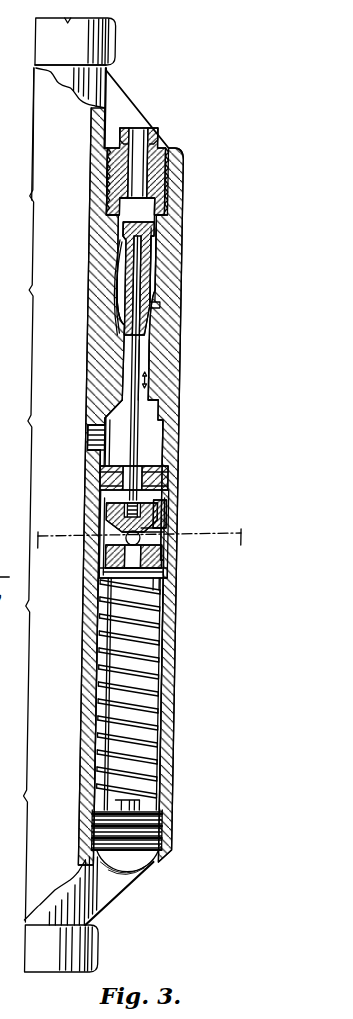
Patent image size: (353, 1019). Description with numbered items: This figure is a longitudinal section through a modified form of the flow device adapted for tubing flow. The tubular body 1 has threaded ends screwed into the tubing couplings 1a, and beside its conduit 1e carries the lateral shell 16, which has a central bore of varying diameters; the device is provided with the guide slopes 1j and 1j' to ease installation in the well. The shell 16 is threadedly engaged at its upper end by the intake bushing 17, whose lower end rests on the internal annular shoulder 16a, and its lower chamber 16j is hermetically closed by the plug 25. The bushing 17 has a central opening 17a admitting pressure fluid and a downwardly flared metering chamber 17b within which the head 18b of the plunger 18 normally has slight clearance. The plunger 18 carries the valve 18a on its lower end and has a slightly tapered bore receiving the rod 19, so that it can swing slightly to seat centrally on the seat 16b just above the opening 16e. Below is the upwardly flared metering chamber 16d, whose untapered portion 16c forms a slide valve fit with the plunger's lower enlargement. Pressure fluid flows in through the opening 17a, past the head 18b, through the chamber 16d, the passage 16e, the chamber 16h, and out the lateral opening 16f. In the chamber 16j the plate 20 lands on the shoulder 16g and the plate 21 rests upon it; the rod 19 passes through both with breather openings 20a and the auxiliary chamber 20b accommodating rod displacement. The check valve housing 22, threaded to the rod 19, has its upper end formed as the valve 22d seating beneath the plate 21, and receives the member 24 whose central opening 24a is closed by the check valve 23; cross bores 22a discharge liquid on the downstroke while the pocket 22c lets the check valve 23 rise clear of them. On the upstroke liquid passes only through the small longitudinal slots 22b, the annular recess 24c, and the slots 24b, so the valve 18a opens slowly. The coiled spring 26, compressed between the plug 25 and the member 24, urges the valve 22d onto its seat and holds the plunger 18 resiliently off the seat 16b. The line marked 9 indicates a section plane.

The tubular body 1 is at (52, 80).
The tubing couplings 1a is at (103, 43).
The conduit 1e is at (44, 110).
The guide slope 1j is at (150, 109).
The guide slope 1j' is at (91, 891).
The lateral shell 16 is at (178, 258).
The internal annular shoulder 16a is at (122, 326).
The seat 16b is at (155, 395).
The untapered portion 16c is at (158, 381).
The metering chamber 16d is at (150, 352).
The opening 16e is at (120, 403).
The lateral opening 16f is at (93, 435).
The internal annular shoulder 16g is at (105, 455).
The chamber 16h is at (160, 457).
The lower chamber 16j is at (166, 647).
The intake bushing 17 is at (163, 183).
The central opening 17a is at (133, 166).
The metering chamber 17b is at (153, 283).
The plunger 18 is at (128, 269).
The valve 18a is at (116, 337).
The head 18b is at (152, 228).
The rod 19 is at (140, 373).
The plate 20 is at (112, 478).
The breather openings 20a is at (175, 472).
The auxiliary chamber 20b is at (152, 486).
The plate 21 is at (178, 498).
The check valve housing 22 is at (113, 525).
The cross bores 22a is at (153, 528).
The longitudinal slots 22b is at (106, 550).
The pocket 22c is at (156, 513).
The valve 22d is at (109, 508).
The check valve 23 is at (161, 547).
The member 24 is at (102, 585).
The central opening 24a is at (180, 585).
The slots 24b is at (184, 610).
The annular recess 24c is at (183, 565).
The plug 25 is at (101, 828).
The coiled spring 26 is at (116, 678).
The section line 9- 9 is at (133, 548).